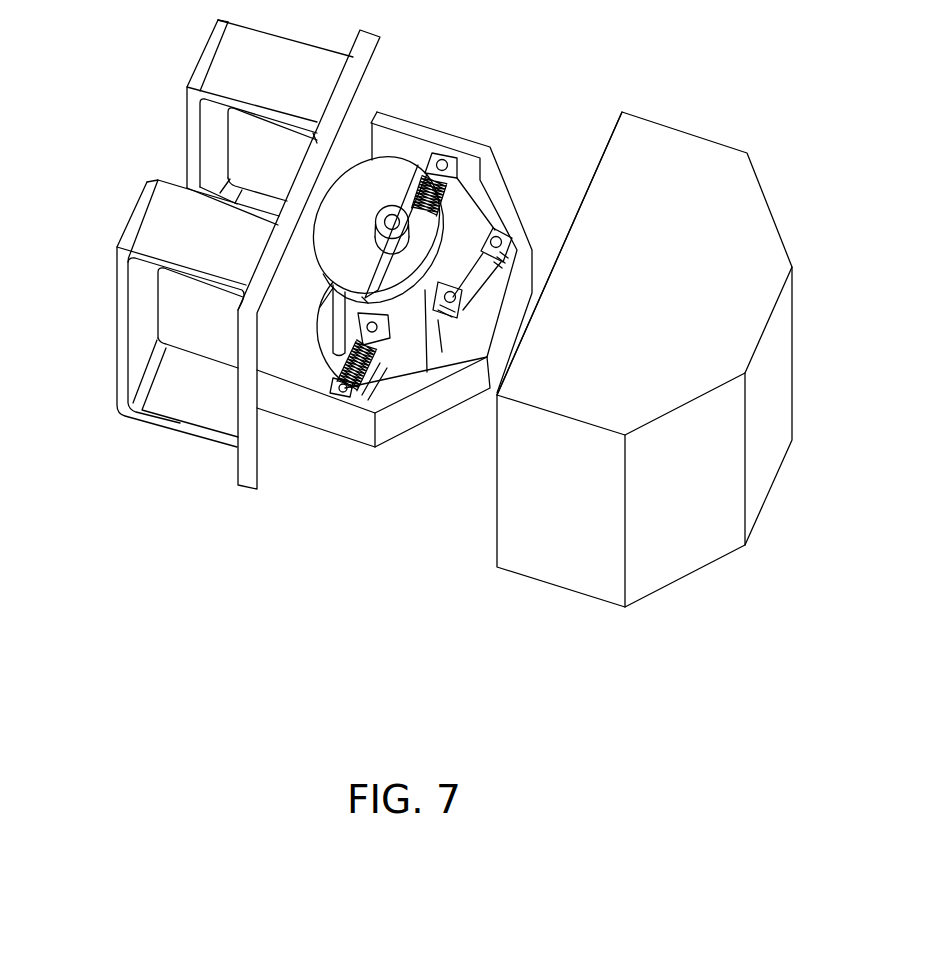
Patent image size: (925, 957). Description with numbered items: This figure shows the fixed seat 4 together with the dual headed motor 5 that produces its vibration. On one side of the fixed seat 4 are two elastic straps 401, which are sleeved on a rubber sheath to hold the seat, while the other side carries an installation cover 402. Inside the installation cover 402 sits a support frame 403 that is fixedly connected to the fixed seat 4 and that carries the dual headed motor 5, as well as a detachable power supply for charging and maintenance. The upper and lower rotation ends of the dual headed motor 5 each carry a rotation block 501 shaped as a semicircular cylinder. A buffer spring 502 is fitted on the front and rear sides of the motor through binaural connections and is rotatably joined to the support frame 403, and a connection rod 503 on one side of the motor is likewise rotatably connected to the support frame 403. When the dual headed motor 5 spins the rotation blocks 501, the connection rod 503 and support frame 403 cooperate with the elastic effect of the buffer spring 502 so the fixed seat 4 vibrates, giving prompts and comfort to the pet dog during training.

The fixed seat 4 is at (243, 422).
The elastic strap 401 is at (175, 413).
The installation cover 402 is at (733, 228).
The support frame 403 is at (411, 132).
The dual headed motor 5 is at (315, 313).
The rotation block 501 is at (332, 226).
The buffer spring 502 is at (355, 382).
The connection rod 503 is at (484, 245).